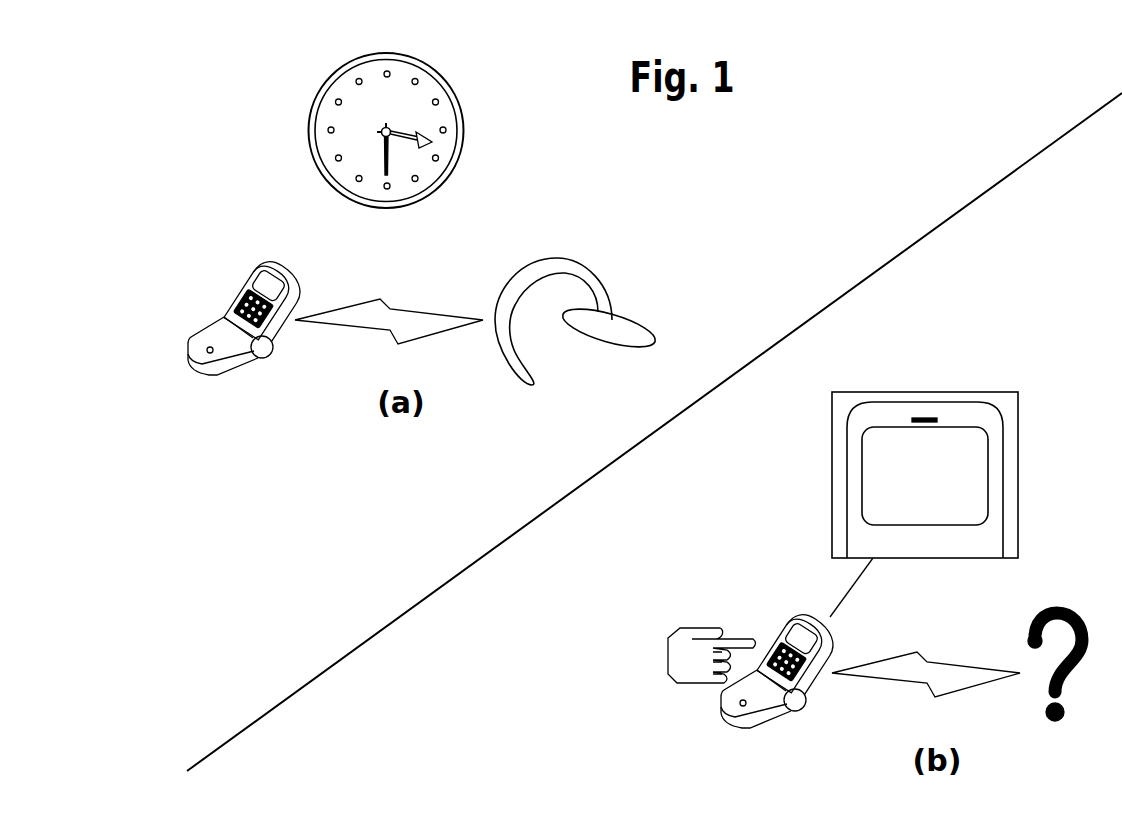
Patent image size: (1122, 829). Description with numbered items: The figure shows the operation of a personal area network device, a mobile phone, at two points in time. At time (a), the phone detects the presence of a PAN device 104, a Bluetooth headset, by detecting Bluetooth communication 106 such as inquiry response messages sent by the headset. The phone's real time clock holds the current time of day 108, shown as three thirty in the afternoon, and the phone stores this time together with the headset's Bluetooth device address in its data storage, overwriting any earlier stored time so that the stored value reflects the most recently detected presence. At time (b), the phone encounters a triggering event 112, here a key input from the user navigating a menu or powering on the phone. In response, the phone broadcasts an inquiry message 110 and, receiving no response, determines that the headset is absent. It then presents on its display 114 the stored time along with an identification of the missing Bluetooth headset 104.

The PAN device 104 is at (627, 353).
The Bluetooth communication 106 is at (385, 297).
The current time of day 108 is at (312, 112).
The inquiry message 110 is at (921, 653).
The triggering event 112 is at (701, 623).
The display 114 is at (1002, 392).